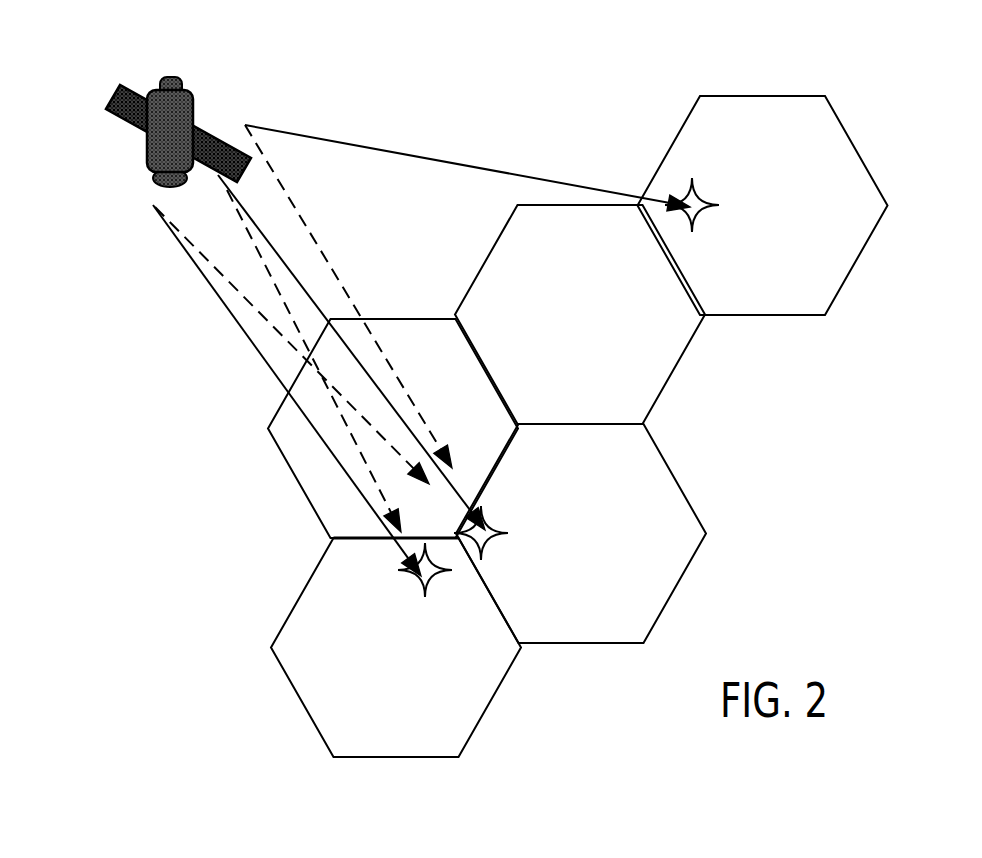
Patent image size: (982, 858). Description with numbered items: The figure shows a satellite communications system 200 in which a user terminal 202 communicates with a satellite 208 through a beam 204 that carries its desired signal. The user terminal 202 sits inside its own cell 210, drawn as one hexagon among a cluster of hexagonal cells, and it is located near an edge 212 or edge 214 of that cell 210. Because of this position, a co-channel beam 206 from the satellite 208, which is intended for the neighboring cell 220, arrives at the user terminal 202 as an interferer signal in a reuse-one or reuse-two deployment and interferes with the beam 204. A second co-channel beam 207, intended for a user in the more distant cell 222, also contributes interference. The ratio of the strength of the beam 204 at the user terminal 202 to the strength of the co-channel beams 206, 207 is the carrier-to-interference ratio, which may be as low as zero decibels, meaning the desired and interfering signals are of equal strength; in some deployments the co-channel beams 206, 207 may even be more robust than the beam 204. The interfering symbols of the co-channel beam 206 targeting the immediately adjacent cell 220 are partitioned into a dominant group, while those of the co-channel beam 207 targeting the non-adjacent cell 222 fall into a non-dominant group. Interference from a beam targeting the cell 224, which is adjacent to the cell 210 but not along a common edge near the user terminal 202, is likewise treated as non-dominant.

The satellite communications system 200 is at (463, 408).
The user terminal 202 is at (554, 614).
The beam 204 is at (372, 325).
The co-channel beam 206 is at (241, 345).
The co-channel beam 207 is at (381, 331).
The satellite 208 is at (197, 115).
The cell 210 is at (605, 521).
The edge 212 is at (361, 361).
The edge 214 is at (481, 426).
The cell 220 is at (311, 647).
The cell 222 is at (577, 242).
The cell 224 is at (583, 371).